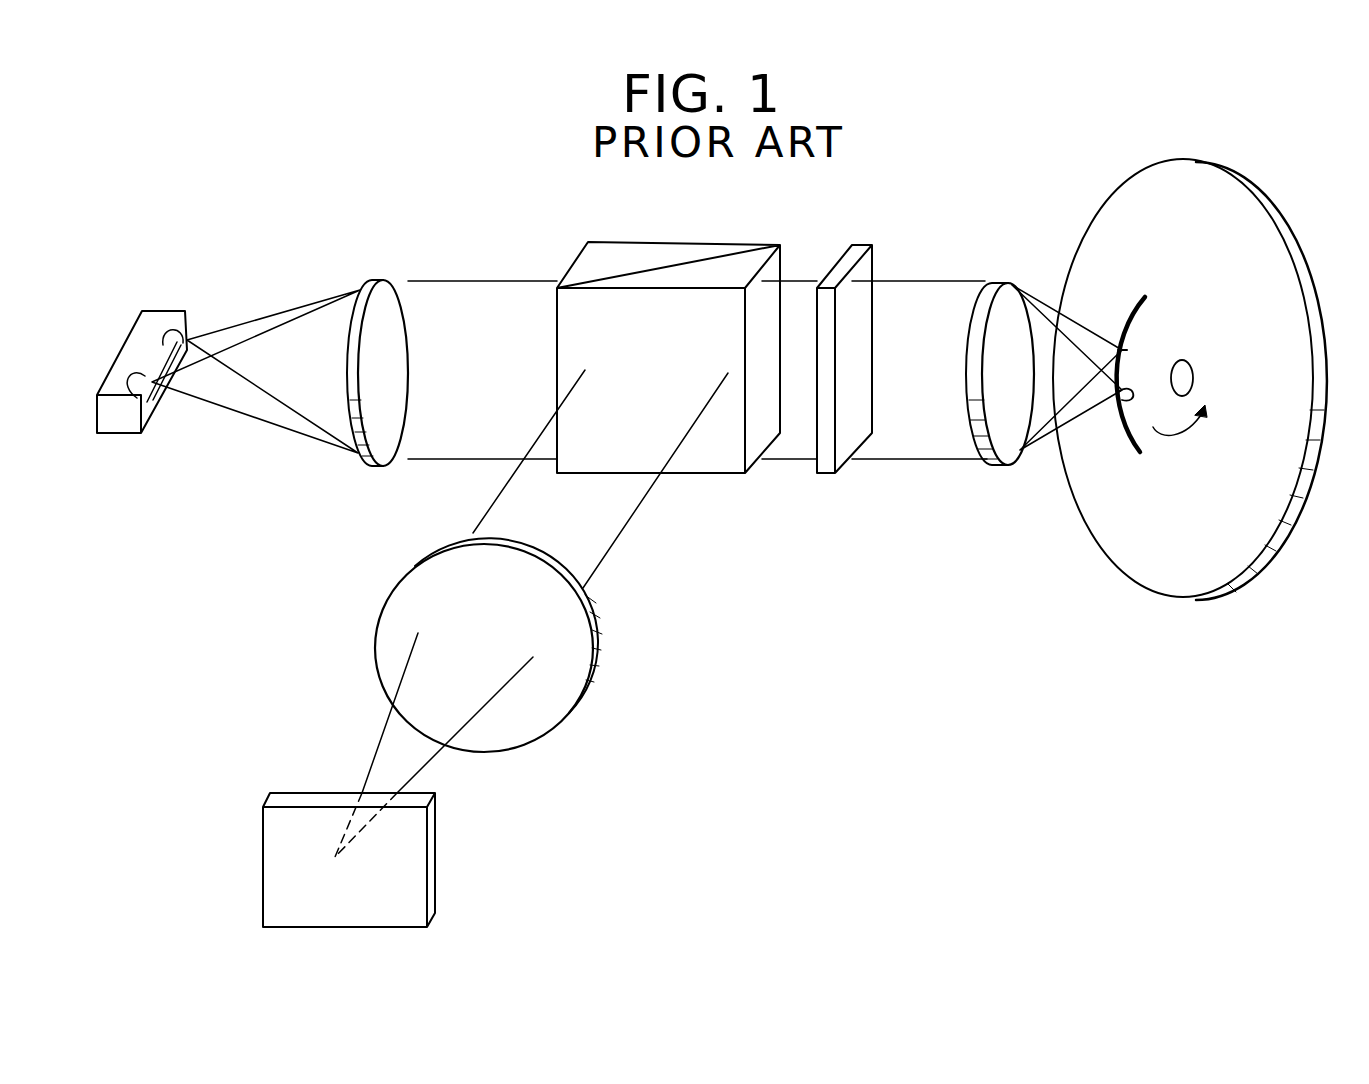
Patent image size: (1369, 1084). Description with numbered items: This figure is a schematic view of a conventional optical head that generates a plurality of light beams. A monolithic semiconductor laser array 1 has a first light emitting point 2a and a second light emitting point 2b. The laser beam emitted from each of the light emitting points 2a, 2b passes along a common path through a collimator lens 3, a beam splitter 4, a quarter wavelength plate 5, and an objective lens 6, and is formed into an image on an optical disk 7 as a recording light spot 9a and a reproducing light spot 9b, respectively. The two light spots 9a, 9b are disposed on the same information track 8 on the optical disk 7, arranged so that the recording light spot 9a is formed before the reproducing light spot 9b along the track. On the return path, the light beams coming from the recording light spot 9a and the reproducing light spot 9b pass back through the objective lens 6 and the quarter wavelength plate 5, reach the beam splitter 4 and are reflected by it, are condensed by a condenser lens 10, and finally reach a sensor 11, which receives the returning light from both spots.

The monolithic semiconductor laser array 1 is at (158, 310).
The first light emitting point 2a is at (165, 333).
The second light emitting point 2b is at (148, 420).
The collimator lens 3 is at (387, 297).
The beam splitter 4 is at (672, 248).
The quarter wavelength plate 5 is at (863, 240).
The objective lens 6 is at (993, 468).
The optical disk 7 is at (1172, 580).
The information track 8 is at (1137, 455).
The recording light spot 9a is at (1135, 351).
The reproducing light spot 9b is at (1127, 412).
The condenser lens 10 is at (578, 652).
The sensor 11 is at (417, 877).